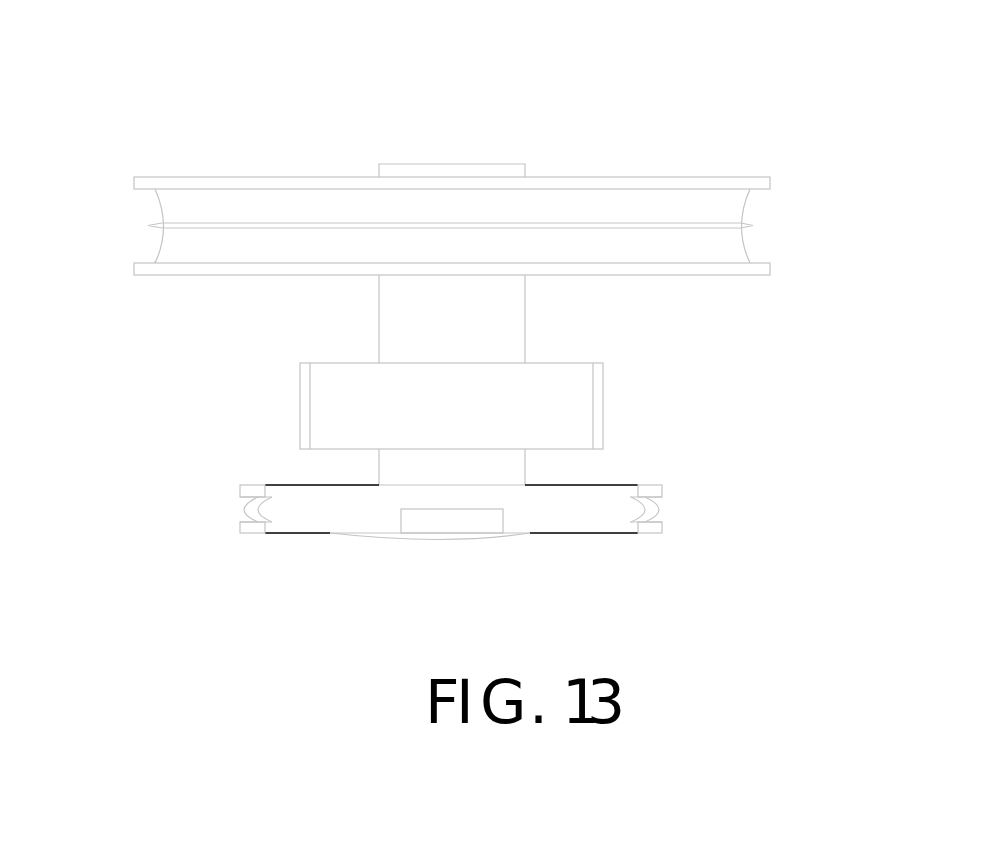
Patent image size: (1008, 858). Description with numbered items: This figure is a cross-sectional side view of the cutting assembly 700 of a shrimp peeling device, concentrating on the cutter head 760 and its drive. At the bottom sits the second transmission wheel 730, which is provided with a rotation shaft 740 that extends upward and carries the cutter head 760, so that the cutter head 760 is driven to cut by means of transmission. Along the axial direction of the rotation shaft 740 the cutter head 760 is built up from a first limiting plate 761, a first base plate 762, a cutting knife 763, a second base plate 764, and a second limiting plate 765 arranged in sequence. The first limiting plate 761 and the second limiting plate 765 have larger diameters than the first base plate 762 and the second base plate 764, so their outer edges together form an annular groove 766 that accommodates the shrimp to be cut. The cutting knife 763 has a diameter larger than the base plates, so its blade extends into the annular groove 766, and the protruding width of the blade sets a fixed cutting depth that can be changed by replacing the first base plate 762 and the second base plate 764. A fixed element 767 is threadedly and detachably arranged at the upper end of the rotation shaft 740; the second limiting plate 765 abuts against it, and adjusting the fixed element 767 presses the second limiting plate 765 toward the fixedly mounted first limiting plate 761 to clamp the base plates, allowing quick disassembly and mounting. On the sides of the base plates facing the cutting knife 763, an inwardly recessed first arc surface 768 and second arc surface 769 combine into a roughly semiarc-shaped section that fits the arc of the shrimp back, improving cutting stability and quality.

The cutting assembly 700 is at (97, 85).
The second transmission wheel 730 is at (313, 517).
The rotation shaft 740 is at (392, 315).
The cutter head 760 is at (769, 119).
The first limiting plate 761 is at (710, 270).
The first base plate 762 is at (252, 248).
The cutting knife 763 is at (750, 227).
The second base plate 764 is at (288, 205).
The second limiting plate 765 is at (688, 182).
The annular groove 766 is at (752, 212).
The fixed element 767 is at (474, 172).
The first arc surface 768 is at (147, 247).
The second arc surface 769 is at (150, 200).